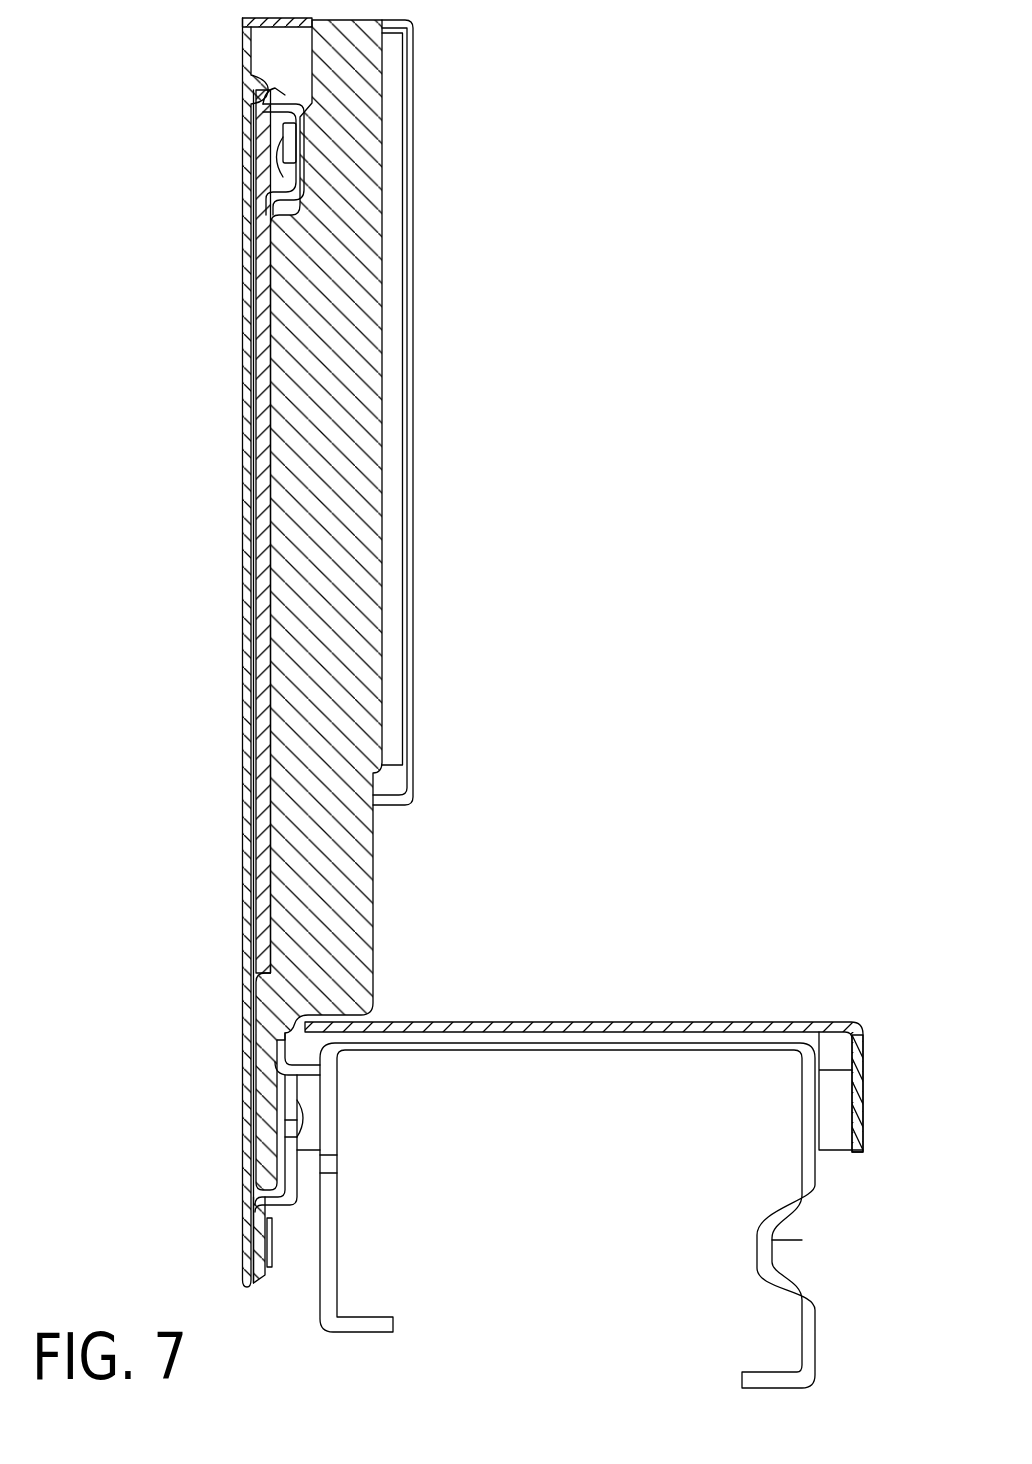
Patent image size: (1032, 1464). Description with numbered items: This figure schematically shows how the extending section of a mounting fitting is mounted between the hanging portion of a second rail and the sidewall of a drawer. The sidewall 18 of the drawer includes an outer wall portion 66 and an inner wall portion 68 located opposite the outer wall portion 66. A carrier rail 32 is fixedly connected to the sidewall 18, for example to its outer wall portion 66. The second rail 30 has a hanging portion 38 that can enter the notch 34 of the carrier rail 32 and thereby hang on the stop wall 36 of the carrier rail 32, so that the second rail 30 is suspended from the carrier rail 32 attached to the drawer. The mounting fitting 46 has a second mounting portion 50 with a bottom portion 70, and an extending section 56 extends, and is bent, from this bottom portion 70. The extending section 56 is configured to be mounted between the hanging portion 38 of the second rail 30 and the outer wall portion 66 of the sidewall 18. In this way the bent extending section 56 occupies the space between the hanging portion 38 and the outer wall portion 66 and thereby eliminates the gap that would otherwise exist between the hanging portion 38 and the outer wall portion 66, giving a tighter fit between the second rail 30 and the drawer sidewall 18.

The sidewall 18 is at (228, 46).
The second rail 30 is at (830, 1175).
The carrier rail 32 is at (481, 1023).
The notch 34 is at (280, 1113).
The stop wall 36 is at (295, 1155).
The hanging portion 38 is at (293, 1100).
The mounting fitting 46 is at (392, 351).
The second mounting portion 50 is at (347, 425).
The extending section 56 is at (272, 1092).
The outer wall portion 66 is at (248, 1023).
The inner wall portion 68 is at (414, 125).
The bottom portion 70 is at (332, 1007).